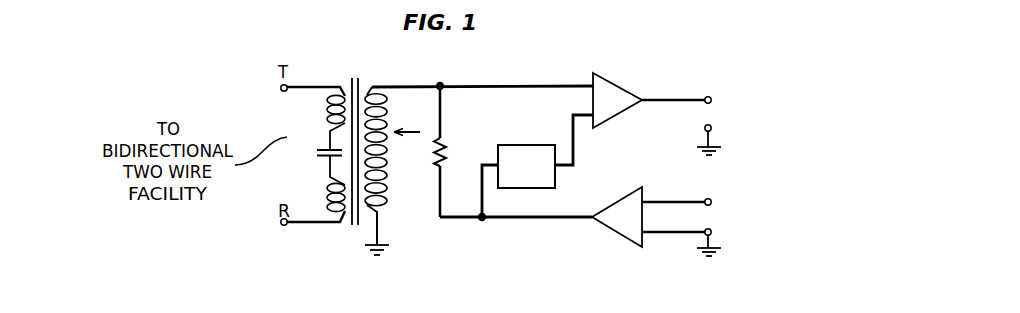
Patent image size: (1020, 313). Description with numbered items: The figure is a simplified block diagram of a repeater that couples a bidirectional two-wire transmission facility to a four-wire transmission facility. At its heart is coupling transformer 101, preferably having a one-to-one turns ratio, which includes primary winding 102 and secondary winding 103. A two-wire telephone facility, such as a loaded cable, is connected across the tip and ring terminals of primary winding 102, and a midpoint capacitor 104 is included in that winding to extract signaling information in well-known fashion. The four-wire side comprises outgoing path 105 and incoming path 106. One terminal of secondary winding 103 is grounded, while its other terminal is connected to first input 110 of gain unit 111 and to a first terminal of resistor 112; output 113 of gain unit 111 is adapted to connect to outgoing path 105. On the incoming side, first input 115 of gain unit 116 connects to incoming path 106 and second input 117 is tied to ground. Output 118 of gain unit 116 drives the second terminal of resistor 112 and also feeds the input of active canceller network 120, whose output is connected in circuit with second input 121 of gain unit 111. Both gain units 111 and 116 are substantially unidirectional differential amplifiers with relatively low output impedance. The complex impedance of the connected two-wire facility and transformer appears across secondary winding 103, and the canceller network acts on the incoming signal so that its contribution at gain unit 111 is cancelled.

The coupling transformer 101 is at (398, 73).
The primary winding 102 is at (342, 223).
The secondary winding 103 is at (385, 187).
The midpoint capacitor 104 is at (318, 152).
The outgoing path 105 is at (751, 120).
The incoming path 106 is at (761, 218).
The first input 110 is at (540, 83).
The gain unit 111 is at (608, 75).
The resistor 112 is at (447, 140).
The output 113 is at (660, 98).
The first input 115 is at (665, 200).
The gain unit 116 is at (606, 228).
The second input 117 is at (677, 233).
The output 118 is at (530, 220).
The active canceller network 120 is at (558, 177).
The second input 121 is at (570, 127).